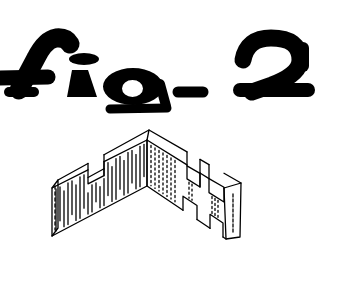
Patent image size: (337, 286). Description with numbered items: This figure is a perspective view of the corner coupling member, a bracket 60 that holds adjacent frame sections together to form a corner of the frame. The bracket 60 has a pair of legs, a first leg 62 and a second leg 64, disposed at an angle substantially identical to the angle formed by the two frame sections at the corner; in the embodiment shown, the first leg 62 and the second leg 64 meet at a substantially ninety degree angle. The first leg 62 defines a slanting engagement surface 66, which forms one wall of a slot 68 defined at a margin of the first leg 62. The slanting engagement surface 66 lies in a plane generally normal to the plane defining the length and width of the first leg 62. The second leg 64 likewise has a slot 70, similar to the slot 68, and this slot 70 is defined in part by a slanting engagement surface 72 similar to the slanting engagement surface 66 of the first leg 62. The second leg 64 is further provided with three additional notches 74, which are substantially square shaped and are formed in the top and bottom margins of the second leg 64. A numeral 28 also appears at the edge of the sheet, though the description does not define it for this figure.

The housing 28 is at (10, 180).
The bracket 60 is at (142, 220).
The first leg 62 is at (84, 222).
The second leg 64 is at (241, 216).
The slanting engagement surface 66 is at (97, 171).
The slot 68 is at (99, 167).
The slot 70 is at (198, 172).
The slanting engagement surface 72 is at (205, 169).
The notches 74 is at (227, 186).